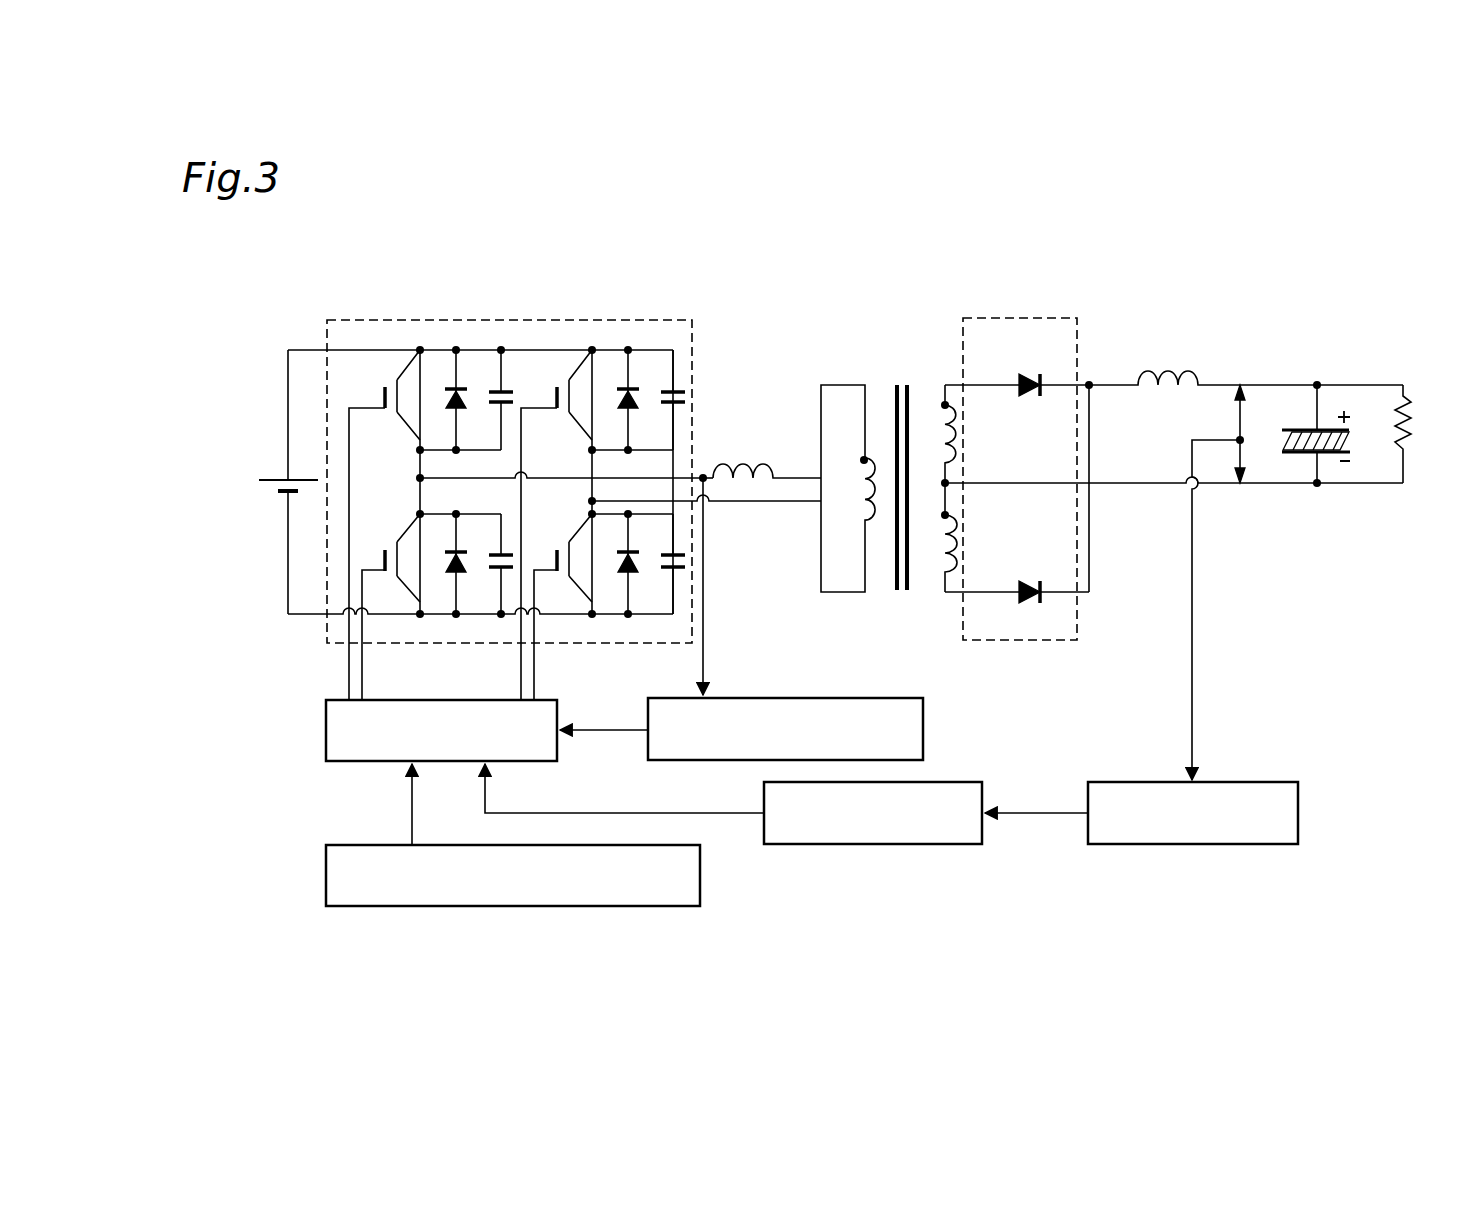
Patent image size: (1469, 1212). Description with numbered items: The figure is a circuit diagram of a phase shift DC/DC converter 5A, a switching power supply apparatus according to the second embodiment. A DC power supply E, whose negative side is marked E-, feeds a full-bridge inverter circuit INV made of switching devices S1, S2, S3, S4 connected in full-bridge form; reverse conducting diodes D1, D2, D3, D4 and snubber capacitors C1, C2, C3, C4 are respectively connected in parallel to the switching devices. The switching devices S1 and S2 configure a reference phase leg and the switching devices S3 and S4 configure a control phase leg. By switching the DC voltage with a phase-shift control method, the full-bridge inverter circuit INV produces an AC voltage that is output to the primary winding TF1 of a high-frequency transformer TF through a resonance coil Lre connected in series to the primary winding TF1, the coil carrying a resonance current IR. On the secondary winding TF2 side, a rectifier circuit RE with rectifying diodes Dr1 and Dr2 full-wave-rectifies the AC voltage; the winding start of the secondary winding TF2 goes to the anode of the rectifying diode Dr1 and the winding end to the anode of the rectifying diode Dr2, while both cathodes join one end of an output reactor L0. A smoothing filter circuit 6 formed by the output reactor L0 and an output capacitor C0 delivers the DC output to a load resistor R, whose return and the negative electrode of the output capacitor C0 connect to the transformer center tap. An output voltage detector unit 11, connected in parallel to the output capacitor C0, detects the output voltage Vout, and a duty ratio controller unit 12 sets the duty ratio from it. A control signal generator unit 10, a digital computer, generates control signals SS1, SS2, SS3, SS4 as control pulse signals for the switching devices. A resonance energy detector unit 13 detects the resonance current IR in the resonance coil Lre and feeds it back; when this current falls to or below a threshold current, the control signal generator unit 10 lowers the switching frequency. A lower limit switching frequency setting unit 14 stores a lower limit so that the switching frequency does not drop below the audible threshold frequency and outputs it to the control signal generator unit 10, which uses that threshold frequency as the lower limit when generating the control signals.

The phase shift DC/DC converter 5A is at (358, 238).
The smoothing filter circuit 6 is at (1358, 343).
The control signal generator unit 10 is at (326, 734).
The output voltage detector unit 11 is at (1265, 781).
The duty ratio controller unit 12 is at (960, 781).
The resonance energy detector unit 13 is at (890, 697).
The lower limit switching frequency setting unit 14 is at (326, 879).
The full-bridge inverter circuit INV is at (554, 497).
The rectifier circuit RE is at (1019, 466).
The DC power supply E is at (286, 482).
The negative terminal E- is at (283, 501).
The switching device S1 is at (384, 525).
The switching device S2 is at (386, 607).
The switching device S3 is at (556, 525).
The switching device S4 is at (558, 607).
The reverse conducting diode D1 is at (436, 400).
The reverse conducting diode D2 is at (437, 564).
The reverse conducting diode D3 is at (608, 400).
The reverse conducting diode D4 is at (609, 564).
The snubber capacitor C1 is at (489, 400).
The snubber capacitor C2 is at (490, 564).
The snubber capacitor C3 is at (661, 400).
The snubber capacitor C4 is at (661, 564).
The control signal SS1 is at (349, 681).
The control signal SS2 is at (362, 681).
The control signal SS3 is at (521, 681).
The control signal SS4 is at (534, 681).
The resonance coil Lre is at (762, 456).
The resonance current IR is at (806, 464).
The high-frequency transformer TF is at (889, 444).
The primary winding TF1 is at (866, 459).
The secondary winding TF2 is at (944, 404).
The rectifying diode Dr1 is at (1017, 374).
The rectifying diode Dr2 is at (1017, 583).
The output reactor L0 is at (1246, 363).
The inductor current IL is at (1126, 373).
The output voltage Vout is at (1210, 582).
The output capacitor C0 is at (1315, 434).
The load resistor R is at (1391, 434).